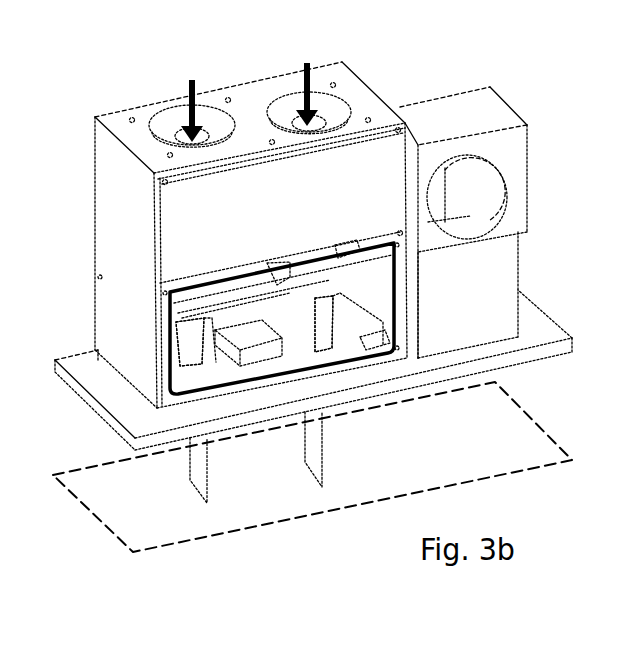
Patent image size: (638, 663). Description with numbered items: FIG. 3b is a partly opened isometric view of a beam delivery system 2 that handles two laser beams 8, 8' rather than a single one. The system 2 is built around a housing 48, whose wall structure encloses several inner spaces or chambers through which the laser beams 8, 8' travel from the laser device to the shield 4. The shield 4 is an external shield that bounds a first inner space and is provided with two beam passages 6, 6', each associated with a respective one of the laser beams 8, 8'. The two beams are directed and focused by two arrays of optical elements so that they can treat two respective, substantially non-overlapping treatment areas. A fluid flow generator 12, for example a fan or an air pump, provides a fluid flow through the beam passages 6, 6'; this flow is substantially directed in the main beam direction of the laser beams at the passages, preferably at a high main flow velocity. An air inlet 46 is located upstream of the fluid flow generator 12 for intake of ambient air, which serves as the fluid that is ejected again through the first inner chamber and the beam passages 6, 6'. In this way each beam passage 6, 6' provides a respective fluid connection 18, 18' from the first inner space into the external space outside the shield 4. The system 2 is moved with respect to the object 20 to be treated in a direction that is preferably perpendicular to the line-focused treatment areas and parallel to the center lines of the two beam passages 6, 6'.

The system 2 is at (470, 35).
The housing 48 is at (102, 195).
The air inlet 46 is at (483, 182).
The fluid flow generator 12 is at (478, 306).
The shield 4 is at (203, 372).
The beam passage 6 is at (109, 331).
The fluid connection 18 is at (131, 333).
The beam passage 6' is at (453, 296).
The fluid connection 18' is at (427, 314).
The laser beam 8 is at (177, 472).
The laser beam 8' is at (290, 449).
The object 20 is at (472, 449).